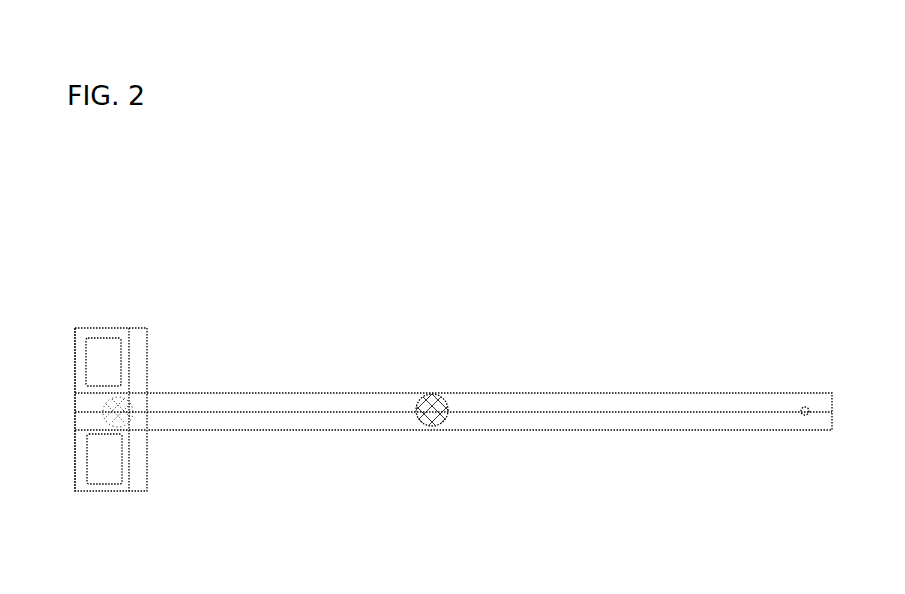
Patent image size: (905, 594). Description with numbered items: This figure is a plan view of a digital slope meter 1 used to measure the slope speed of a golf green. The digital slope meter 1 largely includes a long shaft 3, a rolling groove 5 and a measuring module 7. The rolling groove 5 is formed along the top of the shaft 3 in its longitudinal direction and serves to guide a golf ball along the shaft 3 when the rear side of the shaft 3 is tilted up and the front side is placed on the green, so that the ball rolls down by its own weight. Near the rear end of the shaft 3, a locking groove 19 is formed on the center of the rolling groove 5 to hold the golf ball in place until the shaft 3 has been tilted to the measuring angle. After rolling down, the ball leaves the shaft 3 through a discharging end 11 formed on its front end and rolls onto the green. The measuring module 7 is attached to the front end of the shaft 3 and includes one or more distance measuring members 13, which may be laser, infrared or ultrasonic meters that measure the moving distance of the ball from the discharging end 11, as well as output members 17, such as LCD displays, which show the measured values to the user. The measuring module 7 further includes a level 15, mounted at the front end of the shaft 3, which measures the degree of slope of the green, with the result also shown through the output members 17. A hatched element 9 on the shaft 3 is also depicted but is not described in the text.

The digital slope meter 1 is at (645, 213).
The shaft 3 is at (646, 383).
The rolling groove 5 is at (522, 410).
The measuring module 7 is at (136, 316).
The pivot / bearing element 9 is at (432, 394).
The discharging end 11 is at (75, 411).
The distance measuring member 13 is at (75, 447).
The level 15 is at (133, 403).
The output member 17 is at (103, 350).
The locking groove 19 is at (806, 404).